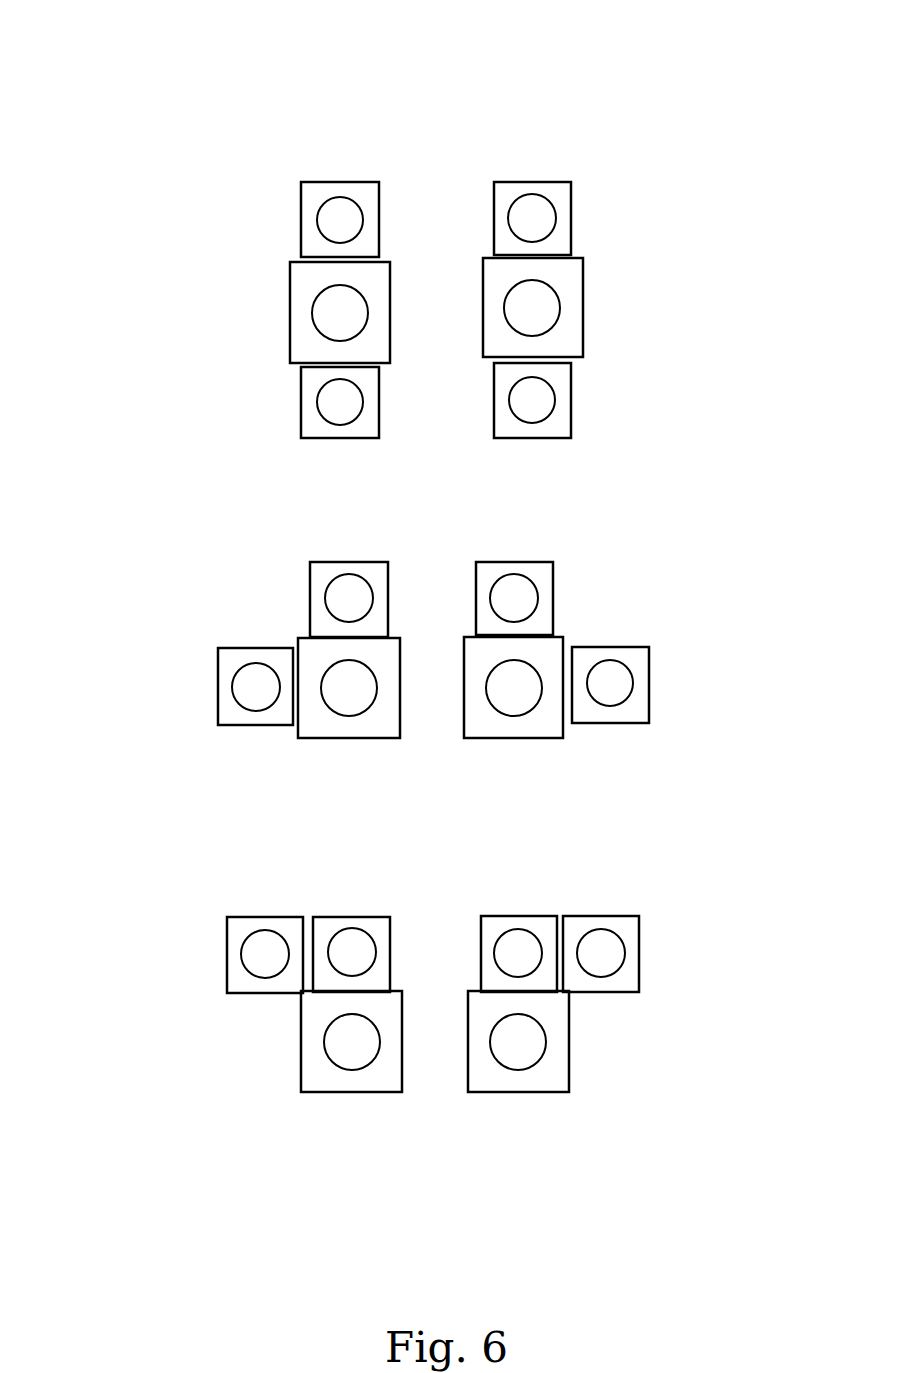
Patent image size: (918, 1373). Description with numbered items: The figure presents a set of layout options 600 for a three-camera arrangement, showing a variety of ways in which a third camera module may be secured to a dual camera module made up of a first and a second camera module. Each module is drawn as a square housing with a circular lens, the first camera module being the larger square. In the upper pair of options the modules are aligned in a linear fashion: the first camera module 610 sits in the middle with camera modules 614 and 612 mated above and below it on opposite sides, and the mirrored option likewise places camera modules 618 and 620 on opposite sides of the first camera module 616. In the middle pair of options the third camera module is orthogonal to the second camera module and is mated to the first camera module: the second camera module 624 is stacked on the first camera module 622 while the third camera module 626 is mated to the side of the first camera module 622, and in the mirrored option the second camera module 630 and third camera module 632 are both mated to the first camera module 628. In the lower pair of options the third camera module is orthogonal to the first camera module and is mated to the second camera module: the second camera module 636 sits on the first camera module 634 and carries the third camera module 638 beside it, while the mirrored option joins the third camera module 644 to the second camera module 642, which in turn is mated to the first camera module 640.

The camera arrangement configurations 600 is at (147, 91).
The first camera module 610 is at (290, 325).
The camera module 612 is at (301, 410).
The camera module 614 is at (301, 217).
The first camera module 616 is at (583, 308).
The camera module 618 is at (571, 217).
The camera module 620 is at (571, 402).
The first camera module 622 is at (298, 733).
The second camera module 624 is at (310, 587).
The third camera module 626 is at (218, 682).
The first camera module 628 is at (563, 735).
The second camera module 630 is at (553, 588).
The third camera module 632 is at (649, 682).
The first camera module 634 is at (301, 1052).
The second camera module 636 is at (352, 915).
The third camera module 638 is at (227, 957).
The first camera module 640 is at (569, 1032).
The second camera module 642 is at (508, 915).
The third camera module 644 is at (639, 940).